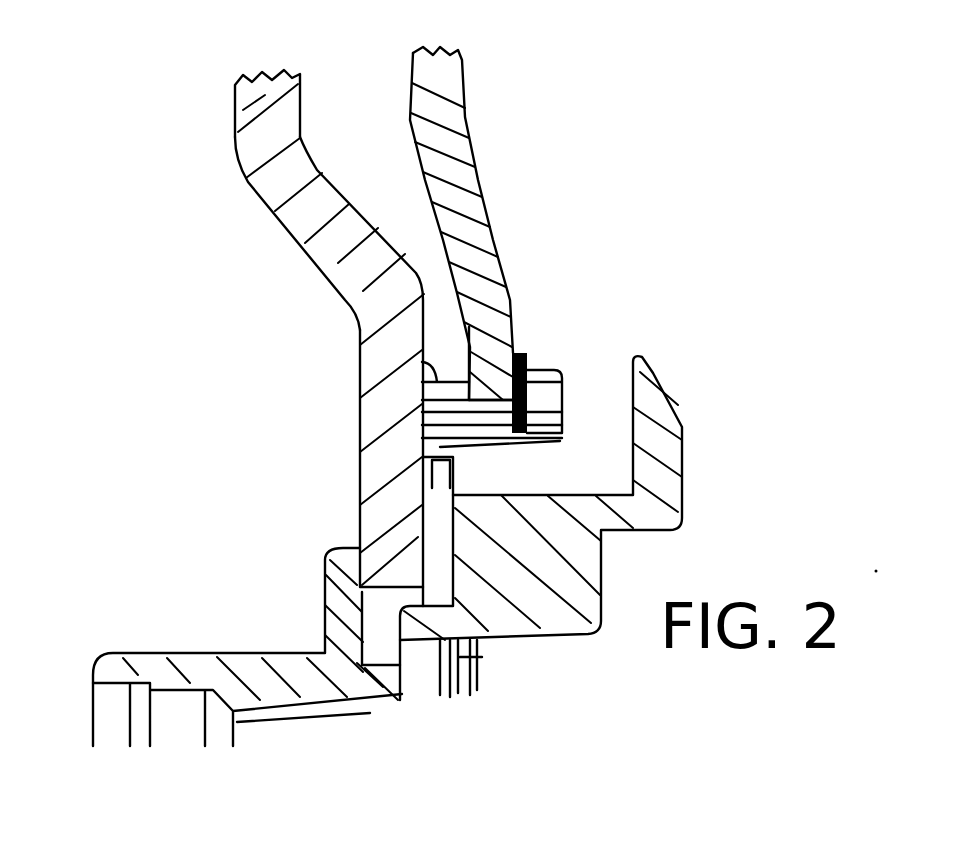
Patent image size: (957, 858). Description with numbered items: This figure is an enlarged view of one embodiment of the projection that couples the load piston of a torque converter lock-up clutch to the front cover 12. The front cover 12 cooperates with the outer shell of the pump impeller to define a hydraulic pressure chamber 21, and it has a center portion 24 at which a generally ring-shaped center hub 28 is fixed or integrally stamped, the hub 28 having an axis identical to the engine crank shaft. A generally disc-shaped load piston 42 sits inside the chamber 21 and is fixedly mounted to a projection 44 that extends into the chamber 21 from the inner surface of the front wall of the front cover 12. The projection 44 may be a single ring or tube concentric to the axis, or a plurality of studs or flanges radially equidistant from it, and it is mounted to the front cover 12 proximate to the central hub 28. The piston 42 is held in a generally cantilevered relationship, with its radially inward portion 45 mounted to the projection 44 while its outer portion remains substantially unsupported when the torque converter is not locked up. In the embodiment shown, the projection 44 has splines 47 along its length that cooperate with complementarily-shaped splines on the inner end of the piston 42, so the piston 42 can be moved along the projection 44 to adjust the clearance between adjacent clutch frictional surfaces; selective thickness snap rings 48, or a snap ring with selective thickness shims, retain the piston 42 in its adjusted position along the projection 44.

The front cover 12 is at (247, 107).
The hydraulic pressure chamber 21 is at (445, 247).
The center portion 24 is at (372, 483).
The center hub 28 is at (270, 677).
The load piston 42 is at (465, 98).
The projection 44 is at (455, 420).
The radially inward portion 45 is at (465, 327).
The splines 47 is at (549, 372).
The snap rings 48 is at (523, 356).